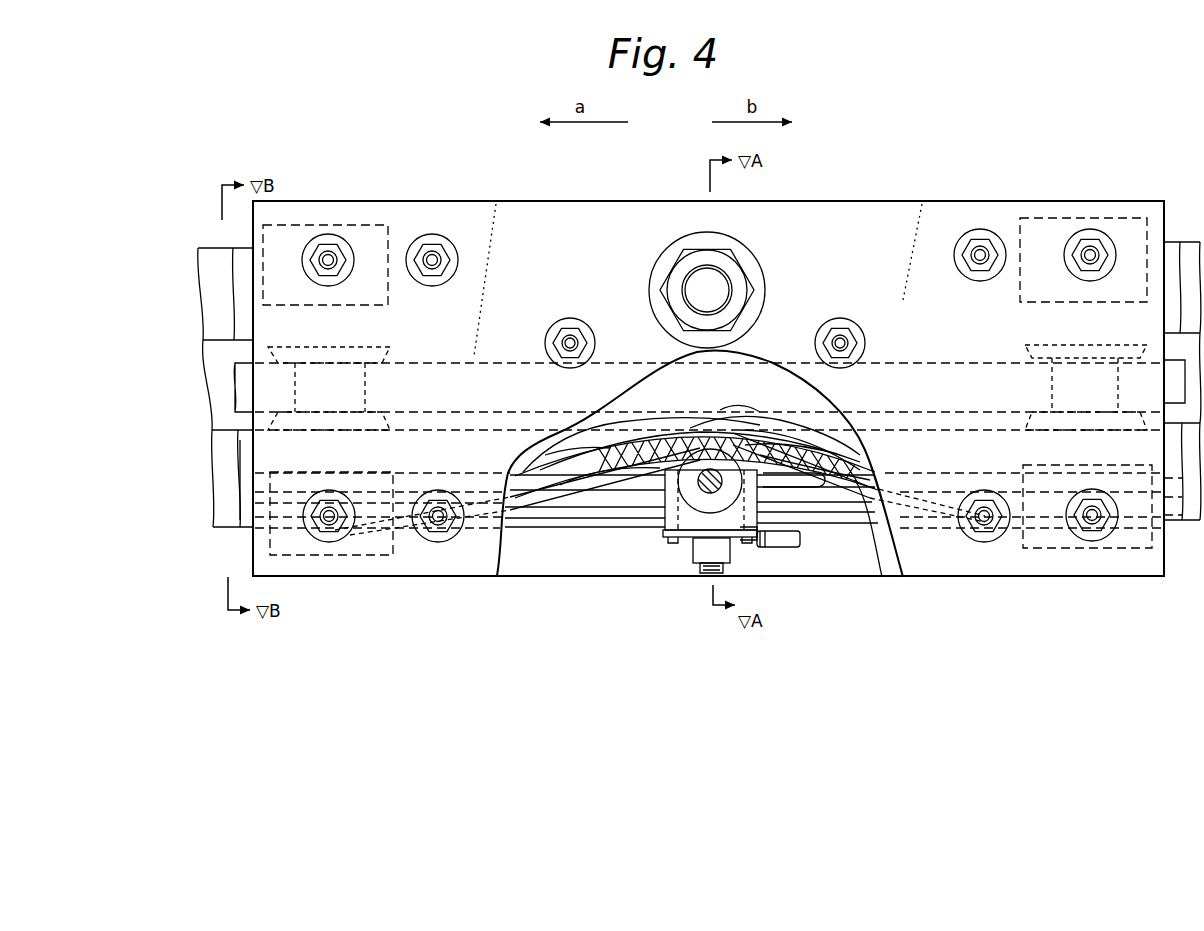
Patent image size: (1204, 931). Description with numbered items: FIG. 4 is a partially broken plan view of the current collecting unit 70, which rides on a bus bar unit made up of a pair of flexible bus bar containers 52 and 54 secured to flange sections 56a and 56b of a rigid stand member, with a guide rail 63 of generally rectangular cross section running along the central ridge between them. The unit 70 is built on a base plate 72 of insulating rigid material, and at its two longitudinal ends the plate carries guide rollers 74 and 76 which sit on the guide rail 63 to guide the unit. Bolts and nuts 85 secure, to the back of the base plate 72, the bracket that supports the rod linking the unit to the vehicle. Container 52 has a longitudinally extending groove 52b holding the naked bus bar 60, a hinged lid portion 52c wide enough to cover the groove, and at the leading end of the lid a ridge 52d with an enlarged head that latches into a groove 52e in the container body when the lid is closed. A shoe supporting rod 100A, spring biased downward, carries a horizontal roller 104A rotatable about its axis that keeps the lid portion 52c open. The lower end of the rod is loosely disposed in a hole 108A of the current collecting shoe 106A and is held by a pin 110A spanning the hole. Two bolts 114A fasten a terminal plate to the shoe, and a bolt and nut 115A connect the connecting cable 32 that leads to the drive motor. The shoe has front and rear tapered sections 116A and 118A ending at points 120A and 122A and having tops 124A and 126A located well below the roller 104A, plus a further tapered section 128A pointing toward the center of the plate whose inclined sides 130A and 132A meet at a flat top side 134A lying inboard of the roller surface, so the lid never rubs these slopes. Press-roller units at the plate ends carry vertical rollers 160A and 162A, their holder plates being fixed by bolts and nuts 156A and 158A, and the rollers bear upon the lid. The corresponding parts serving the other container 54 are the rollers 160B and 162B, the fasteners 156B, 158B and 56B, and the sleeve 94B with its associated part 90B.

The current collecting unit 70 is at (926, 145).
The bolt 156B is at (330, 255).
The mounting block 160B is at (385, 225).
The bolt 56B is at (434, 255).
The sleeve 94B is at (688, 262).
The shaft 90B is at (715, 278).
The bolts and nuts 85 is at (570, 338).
The bolt 158B is at (980, 250).
The mounting block 162B is at (1088, 250).
The flange section 56b is at (215, 280).
The bus bar container 54 is at (242, 302).
The guide roller 76 is at (385, 347).
The guide roller 74 is at (1040, 347).
The guide rail 63 is at (250, 390).
The bus bar container 52 is at (247, 450).
The flange section 56a is at (218, 507).
The front tapered section 116A is at (555, 490).
The top of front tapered section 124A is at (590, 480).
The front inclined side 130A is at (614, 480).
The tapered section 128A is at (660, 470).
The flat top side 134A is at (742, 412).
The hole 108A is at (698, 432).
The pin 110A is at (748, 440).
The shoe supporting rod 100A is at (800, 440).
The horizontal roller 104A is at (823, 417).
The rear inclined side 132A is at (862, 440).
The terminating point 120A is at (548, 458).
The top of rear tapered section 126A is at (862, 437).
The rear tapered section 118A is at (885, 452).
The lid portion 52c is at (935, 462).
The naked bus bar 60 is at (535, 510).
The groove 52e is at (566, 512).
The current collecting shoe 106A is at (655, 520).
The groove 52b is at (600, 532).
The bolts 114A is at (670, 545).
The bolt and nut 115A is at (733, 555).
The connecting cable 32 is at (792, 547).
The terminating point 122A is at (833, 490).
The ridge 52d is at (880, 540).
The bolts and nuts 158A is at (984, 522).
The vertical roller 162A is at (1090, 520).
The vertical roller 160A is at (340, 556).
The base plate 72 is at (385, 568).
The bolts and nuts 156A is at (330, 520).